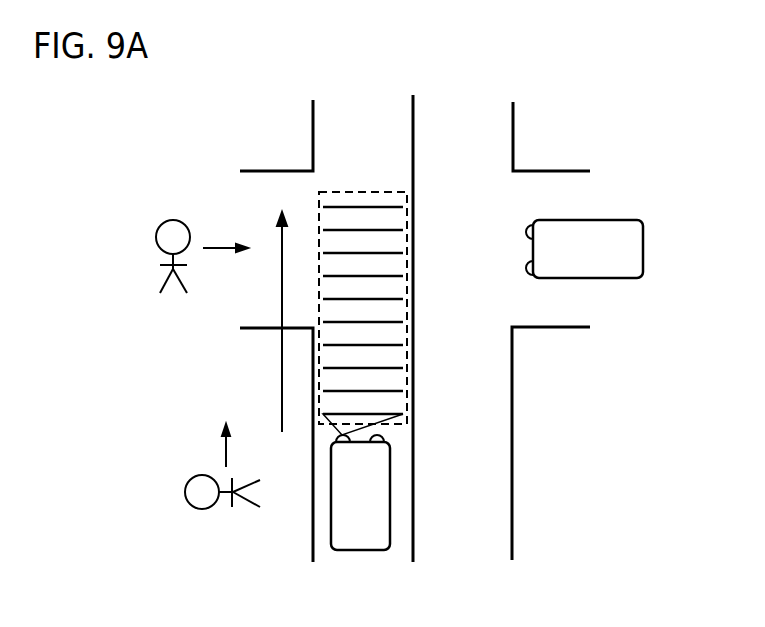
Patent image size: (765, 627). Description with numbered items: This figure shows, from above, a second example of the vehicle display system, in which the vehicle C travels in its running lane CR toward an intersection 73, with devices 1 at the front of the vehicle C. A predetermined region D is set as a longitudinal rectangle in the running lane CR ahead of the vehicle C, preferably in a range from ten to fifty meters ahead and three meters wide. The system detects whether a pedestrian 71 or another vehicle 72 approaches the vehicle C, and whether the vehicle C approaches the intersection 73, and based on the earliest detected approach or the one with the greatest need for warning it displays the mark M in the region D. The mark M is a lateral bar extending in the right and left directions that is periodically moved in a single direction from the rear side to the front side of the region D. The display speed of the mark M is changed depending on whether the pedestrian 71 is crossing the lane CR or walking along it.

The object detection device (sensor) 1 is at (343, 438).
The pedestrian 71 is at (172, 214).
The other vehicle 72 is at (615, 232).
The intersection 73 is at (460, 189).
The running lane CR is at (358, 122).
The predetermined region D is at (408, 306).
The mark M is at (390, 391).
The vehicle C is at (368, 546).